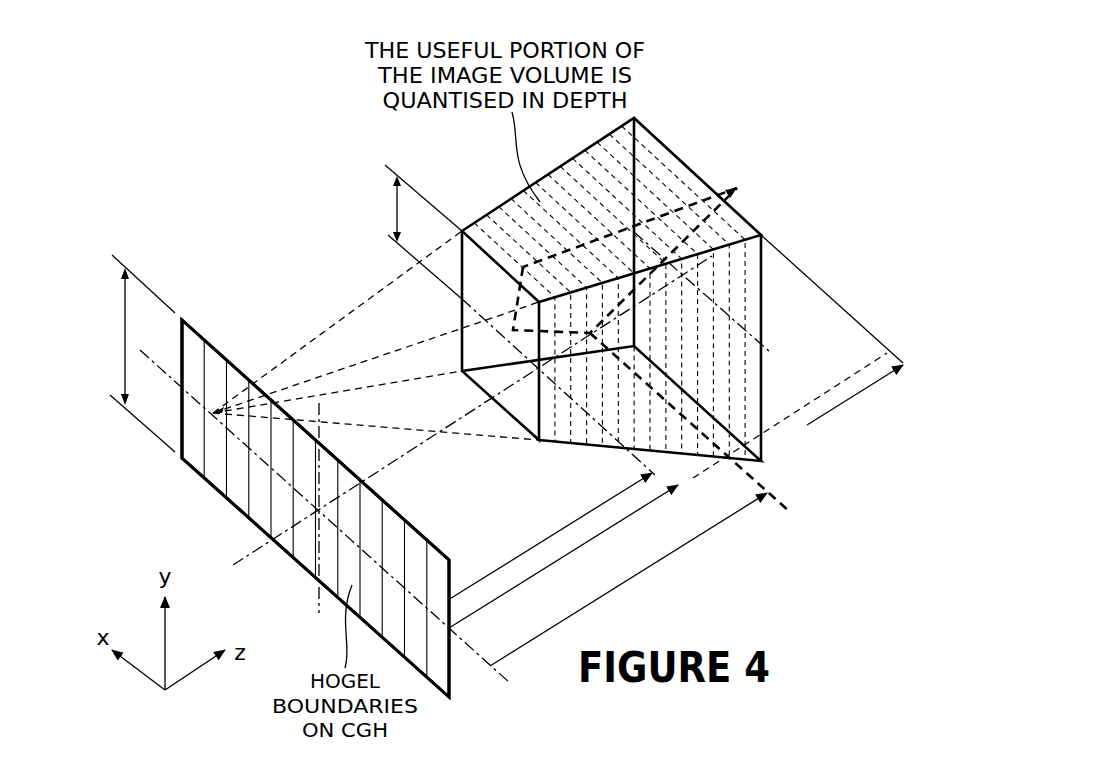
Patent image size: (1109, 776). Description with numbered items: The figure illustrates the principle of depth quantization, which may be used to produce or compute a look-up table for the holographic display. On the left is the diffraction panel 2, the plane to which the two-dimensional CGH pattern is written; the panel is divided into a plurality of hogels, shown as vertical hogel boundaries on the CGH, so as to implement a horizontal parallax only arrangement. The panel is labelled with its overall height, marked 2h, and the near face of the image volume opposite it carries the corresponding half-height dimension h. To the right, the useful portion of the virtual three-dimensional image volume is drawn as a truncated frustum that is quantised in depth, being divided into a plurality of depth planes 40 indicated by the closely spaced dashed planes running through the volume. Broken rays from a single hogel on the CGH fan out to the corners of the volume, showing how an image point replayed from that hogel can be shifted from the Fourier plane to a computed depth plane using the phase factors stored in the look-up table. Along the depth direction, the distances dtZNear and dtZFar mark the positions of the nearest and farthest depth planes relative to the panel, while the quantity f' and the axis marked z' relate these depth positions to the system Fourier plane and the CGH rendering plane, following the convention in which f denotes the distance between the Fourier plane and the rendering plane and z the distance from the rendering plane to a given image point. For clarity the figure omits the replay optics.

The diffraction panel 2 is at (218, 351).
The depth planes 40 is at (686, 163).
The computer generated hologram CGH is at (180, 428).
The half-height of image volume near face h is at (515, 320).
The height of CGH 2h is at (134, 353).
The distance to near plane of image volume dtZNear is at (550, 536).
The distance to far plane of image volume dtZFar is at (838, 331).
The focal distance to z' point f' is at (628, 579).
The z' axis point z' is at (668, 490).